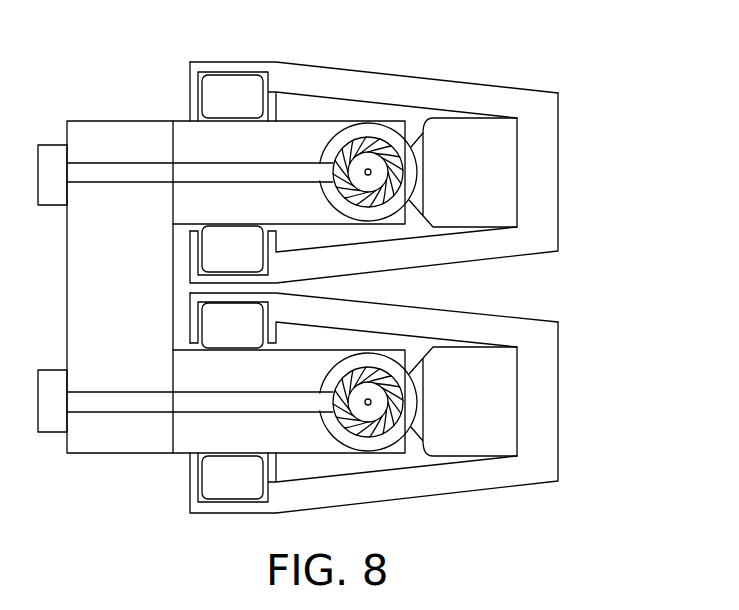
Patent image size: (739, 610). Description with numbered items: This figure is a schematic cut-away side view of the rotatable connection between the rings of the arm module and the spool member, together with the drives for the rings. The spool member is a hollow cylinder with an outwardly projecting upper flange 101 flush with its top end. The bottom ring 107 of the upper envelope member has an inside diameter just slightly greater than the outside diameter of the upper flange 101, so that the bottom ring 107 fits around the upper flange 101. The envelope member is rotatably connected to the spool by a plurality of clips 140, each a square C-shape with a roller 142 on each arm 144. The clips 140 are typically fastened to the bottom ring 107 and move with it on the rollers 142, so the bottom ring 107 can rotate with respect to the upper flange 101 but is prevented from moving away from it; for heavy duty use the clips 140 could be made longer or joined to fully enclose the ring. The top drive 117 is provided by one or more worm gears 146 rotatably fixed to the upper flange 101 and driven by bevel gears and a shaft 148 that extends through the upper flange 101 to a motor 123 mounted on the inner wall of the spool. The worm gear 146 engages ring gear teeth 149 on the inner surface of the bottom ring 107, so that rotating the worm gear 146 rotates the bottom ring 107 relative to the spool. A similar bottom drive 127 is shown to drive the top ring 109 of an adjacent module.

The upper flange 101 is at (334, 121).
The bottom ring 107 is at (441, 117).
The top ring 109 is at (457, 457).
The top drive 117 is at (311, 146).
The motor 123 is at (54, 207).
The bottom drive 127 is at (308, 377).
The clip 140 is at (558, 199).
The roller 142 is at (208, 88).
The arm 144 is at (313, 66).
The worm gear 146 is at (397, 121).
The shaft 148 is at (135, 185).
The ring gear teeth 149 is at (423, 147).